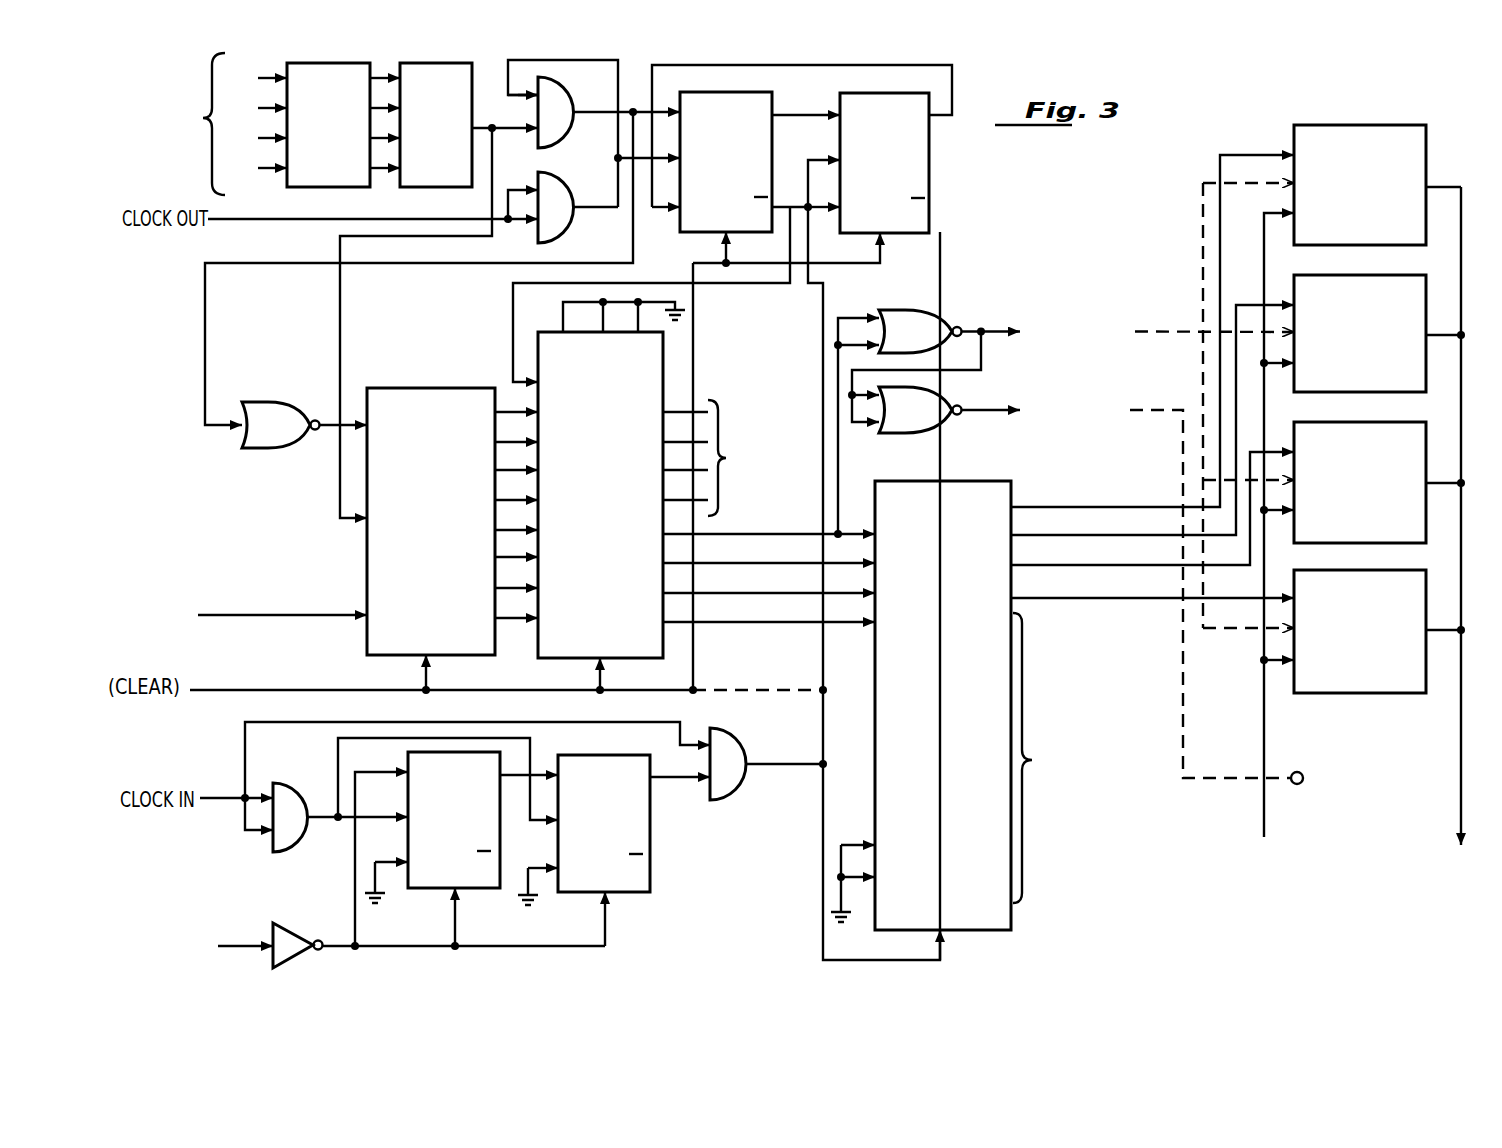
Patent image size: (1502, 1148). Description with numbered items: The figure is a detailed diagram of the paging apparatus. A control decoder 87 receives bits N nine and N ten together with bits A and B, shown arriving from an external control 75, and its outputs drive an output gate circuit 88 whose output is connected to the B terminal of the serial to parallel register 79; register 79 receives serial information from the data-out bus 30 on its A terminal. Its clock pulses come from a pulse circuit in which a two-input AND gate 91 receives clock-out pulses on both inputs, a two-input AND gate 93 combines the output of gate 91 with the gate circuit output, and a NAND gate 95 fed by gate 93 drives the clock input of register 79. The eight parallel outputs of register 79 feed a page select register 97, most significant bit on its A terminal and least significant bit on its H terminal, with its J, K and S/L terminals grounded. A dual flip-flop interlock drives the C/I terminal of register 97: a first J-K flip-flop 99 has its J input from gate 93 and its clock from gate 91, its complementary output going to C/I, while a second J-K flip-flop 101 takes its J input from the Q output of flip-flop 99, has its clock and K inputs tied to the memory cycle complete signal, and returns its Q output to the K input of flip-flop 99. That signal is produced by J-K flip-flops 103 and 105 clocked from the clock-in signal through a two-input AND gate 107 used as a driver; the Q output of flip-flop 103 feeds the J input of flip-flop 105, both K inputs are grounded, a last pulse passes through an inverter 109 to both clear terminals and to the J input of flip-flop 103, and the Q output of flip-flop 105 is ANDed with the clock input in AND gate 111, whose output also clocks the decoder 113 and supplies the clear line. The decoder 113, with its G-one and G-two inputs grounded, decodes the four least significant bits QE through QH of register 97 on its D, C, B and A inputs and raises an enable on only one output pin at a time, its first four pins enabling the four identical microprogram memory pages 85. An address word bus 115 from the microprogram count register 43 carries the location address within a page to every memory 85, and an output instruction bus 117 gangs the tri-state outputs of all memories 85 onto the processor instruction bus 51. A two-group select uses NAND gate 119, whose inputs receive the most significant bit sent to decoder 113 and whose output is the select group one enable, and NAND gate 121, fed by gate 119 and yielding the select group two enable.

The external control 75 is at (204, 124).
The control decoder 87 is at (289, 184).
The gate circuit 88 is at (473, 86).
The AND gate 93 is at (571, 131).
The AND gate 91 is at (571, 225).
The first J-K flip-flop 99 is at (680, 232).
The second J-K flip-flop 101 is at (922, 184).
The NAND gate 95 is at (304, 431).
The serial to parallel register 79 is at (404, 388).
The data-out bus 30 is at (240, 608).
The page select register 97 is at (544, 337).
The NAND gate 119 is at (913, 310).
The NAND gate 121 is at (915, 430).
The decoder 113 is at (974, 931).
The address word bus 115 is at (1260, 716).
The microprogram memory 85 is at (1430, 132).
The microprogram count register 43 is at (1258, 570).
The output instruction bus 117 is at (1455, 743).
The instruction bus 51 is at (1431, 890).
The AND gate 107 is at (290, 784).
The inverter 109 is at (297, 932).
The J-K flip-flop 103 is at (486, 889).
The J-K flip-flop 105 is at (627, 892).
The AND gate 111 is at (724, 790).